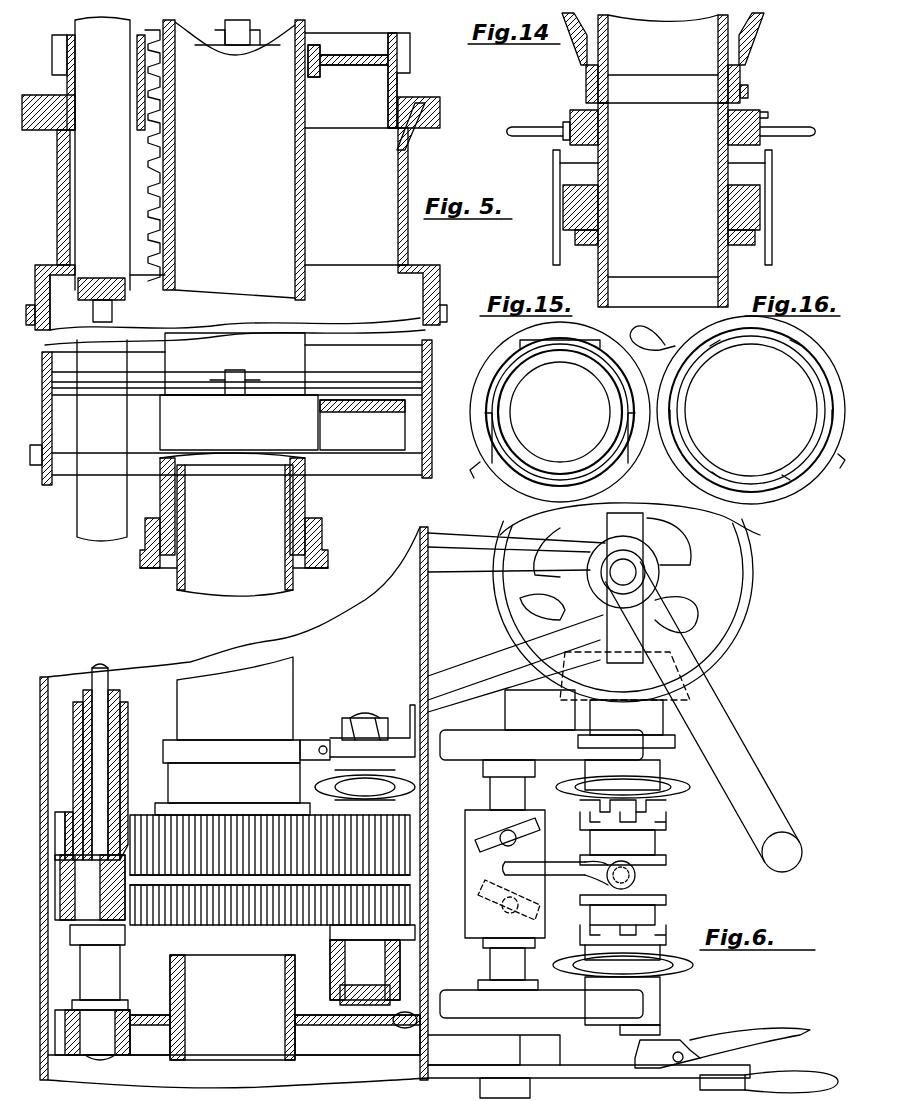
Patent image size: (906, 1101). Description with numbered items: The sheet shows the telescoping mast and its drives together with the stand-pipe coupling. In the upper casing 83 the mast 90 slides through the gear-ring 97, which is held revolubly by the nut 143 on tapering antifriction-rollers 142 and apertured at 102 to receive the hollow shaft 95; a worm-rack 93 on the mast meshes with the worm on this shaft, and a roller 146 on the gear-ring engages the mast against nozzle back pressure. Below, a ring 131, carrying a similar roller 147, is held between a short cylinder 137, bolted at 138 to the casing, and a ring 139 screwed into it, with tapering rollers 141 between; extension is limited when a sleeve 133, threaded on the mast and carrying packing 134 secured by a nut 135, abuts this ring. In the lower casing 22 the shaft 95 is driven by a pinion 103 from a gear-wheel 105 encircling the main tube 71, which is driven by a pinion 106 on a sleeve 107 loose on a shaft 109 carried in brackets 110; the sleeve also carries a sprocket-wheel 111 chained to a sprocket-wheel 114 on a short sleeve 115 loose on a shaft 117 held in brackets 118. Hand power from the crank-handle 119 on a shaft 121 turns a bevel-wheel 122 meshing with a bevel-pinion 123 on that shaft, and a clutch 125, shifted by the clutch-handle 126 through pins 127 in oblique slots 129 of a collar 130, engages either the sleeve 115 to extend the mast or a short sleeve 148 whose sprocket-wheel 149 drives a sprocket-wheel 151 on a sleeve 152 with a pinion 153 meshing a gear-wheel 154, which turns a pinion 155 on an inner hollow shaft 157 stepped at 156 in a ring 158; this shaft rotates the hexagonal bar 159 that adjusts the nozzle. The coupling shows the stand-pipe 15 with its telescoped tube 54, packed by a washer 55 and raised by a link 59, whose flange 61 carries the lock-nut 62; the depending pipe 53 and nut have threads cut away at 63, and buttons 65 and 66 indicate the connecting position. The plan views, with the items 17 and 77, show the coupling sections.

In FIG. 14, the stand-pipe 15 is at (664, 294).
In FIG. 14, the handle 17 is at (572, 112).
In FIG. 16, the handle 17 is at (750, 340).
In FIG. 6, the casing 22 is at (237, 645).
In FIG. 14, the depending pipe 53 is at (612, 63).
In FIG. 15, the depending pipe 53 is at (561, 364).
In FIG. 14, the tube 54 is at (658, 277).
In FIG. 14, the washer 55 is at (600, 205).
In FIG. 14, the link 59 is at (553, 243).
In FIG. 14, the outwardly-turned flange 61 is at (750, 96).
In FIG. 14, the lock-nut 62 is at (795, 133).
In FIG. 16, the lock-nut 62 is at (662, 345).
In FIG. 14, the cut-away thread portions 63 is at (752, 88).
In FIG. 15, the cut-away thread portions 63 is at (545, 492).
In FIG. 16, the cut-away thread portions 63 is at (748, 480).
In FIG. 14, the button 65 is at (748, 55).
In FIG. 15, the button 65 is at (474, 480).
In FIG. 14, the button 66 is at (770, 113).
In FIG. 16, the button 66 is at (835, 470).
In FIG. 6, the main tube 71 is at (293, 692).
In FIG. 14, the funnel ring 77 is at (768, 20).
In FIG. 15, the funnel ring 77 is at (620, 475).
In FIG. 5, the upper casing 83 is at (432, 378).
In FIG. 5, the mast 90 is at (305, 215).
In FIG. 5, the worm-rack 93 is at (175, 196).
In FIG. 5, the hollow shaft 95 is at (148, 116).
In FIG. 6, the hollow shaft 95 is at (128, 720).
In FIG. 5, the gear-ring 97 is at (410, 55).
In FIG. 5, the aperture 102 is at (75, 30).
In FIG. 6, the pinion 103 is at (60, 812).
In FIG. 6, the gear-wheel 105 is at (155, 808).
In FIG. 6, the pinion 106 is at (395, 835).
In FIG. 6, the sleeve 107 is at (406, 805).
In FIG. 6, the shaft 109 is at (362, 718).
In FIG. 6, the brackets 110 is at (400, 733).
In FIG. 6, the sprocket-wheel 111 is at (370, 781).
In FIG. 6, the sprocket-wheel 114 is at (560, 780).
In FIG. 6, the short sleeve 115 is at (660, 770).
In FIG. 6, the shaft 117 is at (666, 818).
In FIG. 6, the brackets 118 is at (541, 874).
In FIG. 6, the crank-handle 119 is at (748, 762).
In FIG. 6, the shaft 121 is at (636, 572).
In FIG. 6, the bevel-wheel 122 is at (745, 605).
In FIG. 6, the bevel-pinion 123 is at (572, 700).
In FIG. 6, the clutch 125 is at (660, 845).
In FIG. 6, the clutch-handle 126 is at (800, 1068).
In FIG. 6, the pins 127 is at (508, 845).
In FIG. 6, the oblique slots 129 is at (495, 838).
In FIG. 6, the collar 130 is at (470, 882).
In FIG. 5, the ring 131 is at (362, 425).
In FIG. 5, the sleeve 133 is at (310, 505).
In FIG. 5, the packing 134 is at (285, 537).
In FIG. 5, the nut 135 is at (322, 538).
In FIG. 5, the short cylinder 137 is at (432, 460).
In FIG. 5, the bolts 138 is at (42, 490).
In FIG. 5, the ring 139 is at (378, 385).
In FIG. 5, the tapering rollers 141 is at (432, 398).
In FIG. 5, the tapering antifriction-rollers 142 is at (420, 118).
In FIG. 5, the nut 143 is at (440, 97).
In FIG. 5, the roller 146 is at (245, 20).
In FIG. 5, the roller 147 is at (235, 370).
In FIG. 6, the short sleeve 148 is at (660, 998).
In FIG. 6, the sprocket-wheel 149 is at (694, 964).
In FIG. 6, the sprocket-wheel 151 is at (415, 975).
In FIG. 6, the sleeve 152 is at (375, 933).
In FIG. 6, the pinion 153 is at (395, 905).
In FIG. 6, the gear-wheel 154 is at (160, 935).
In FIG. 6, the pinion 155 is at (70, 940).
In FIG. 6, the step 156 is at (92, 1035).
In FIG. 5, the hollow shaft 157 is at (125, 302).
In FIG. 6, the hollow shaft 157 is at (120, 694).
In FIG. 6, the ring 158 is at (138, 1010).
In FIG. 5, the bar 159 is at (93, 310).
In FIG. 6, the bar 159 is at (105, 665).